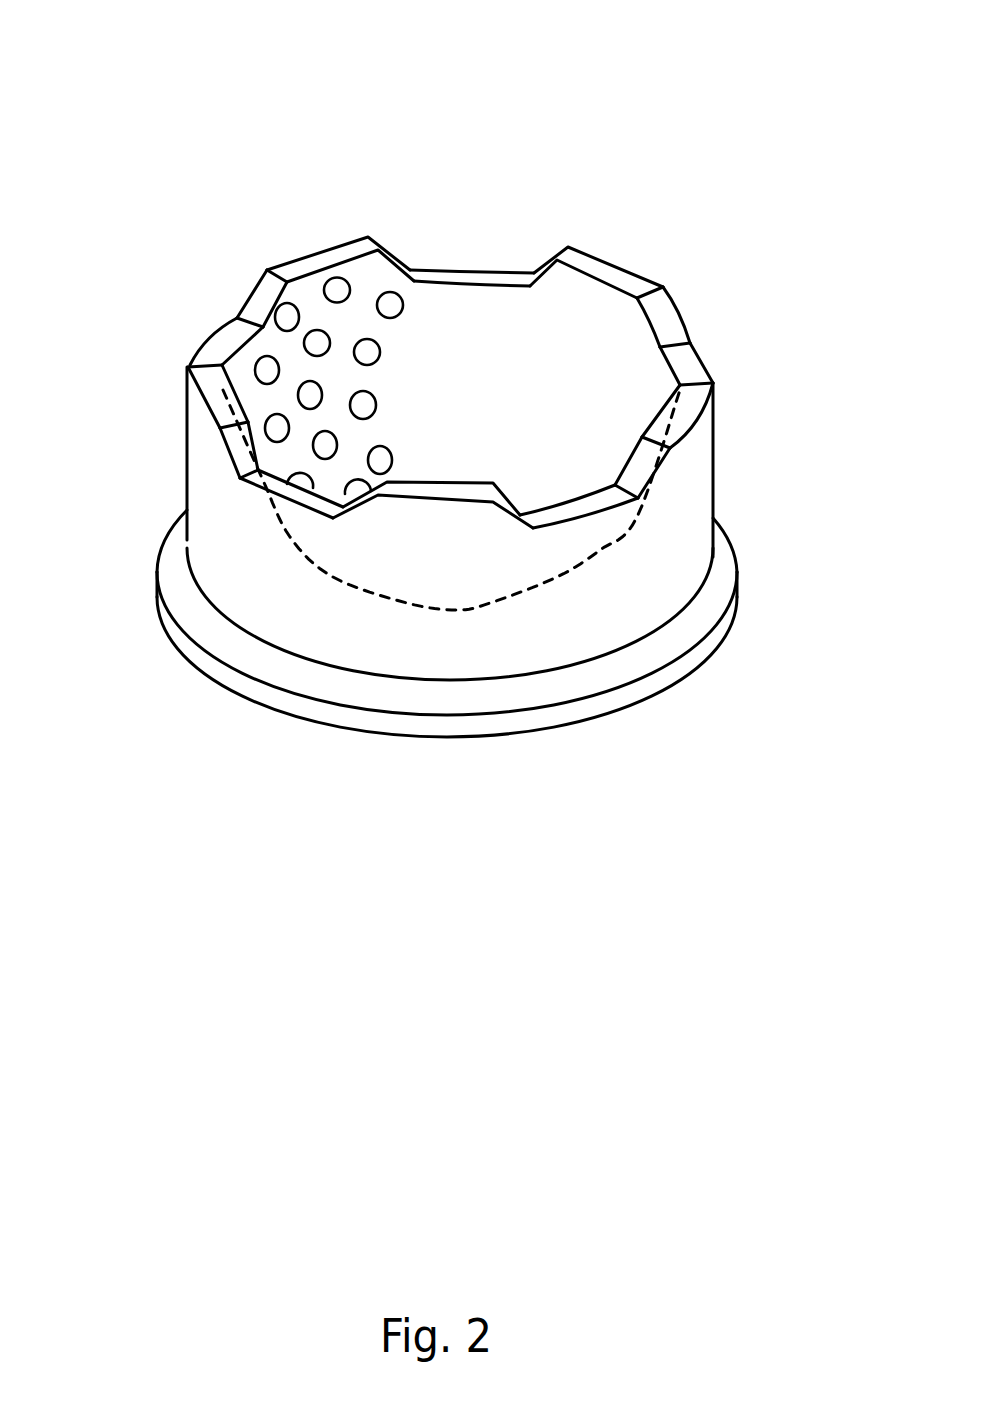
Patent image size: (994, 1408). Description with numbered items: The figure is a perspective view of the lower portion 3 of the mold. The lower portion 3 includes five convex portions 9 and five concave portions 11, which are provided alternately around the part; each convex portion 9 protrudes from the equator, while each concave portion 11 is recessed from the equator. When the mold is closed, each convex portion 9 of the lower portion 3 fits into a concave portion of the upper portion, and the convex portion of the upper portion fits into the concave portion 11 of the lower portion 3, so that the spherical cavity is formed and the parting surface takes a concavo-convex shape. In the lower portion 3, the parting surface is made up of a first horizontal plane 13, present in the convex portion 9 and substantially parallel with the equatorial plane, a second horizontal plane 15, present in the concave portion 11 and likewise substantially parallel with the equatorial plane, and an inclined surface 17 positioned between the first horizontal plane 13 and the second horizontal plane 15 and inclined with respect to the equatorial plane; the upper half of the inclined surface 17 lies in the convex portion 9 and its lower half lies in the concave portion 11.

The lower portion 3 is at (814, 46).
The convex portion 9 is at (312, 245).
The concave portion 11 is at (483, 258).
The first horizontal plane 13 is at (207, 385).
The second horizontal plane 15 is at (693, 368).
The inclined surface 17 is at (267, 298).